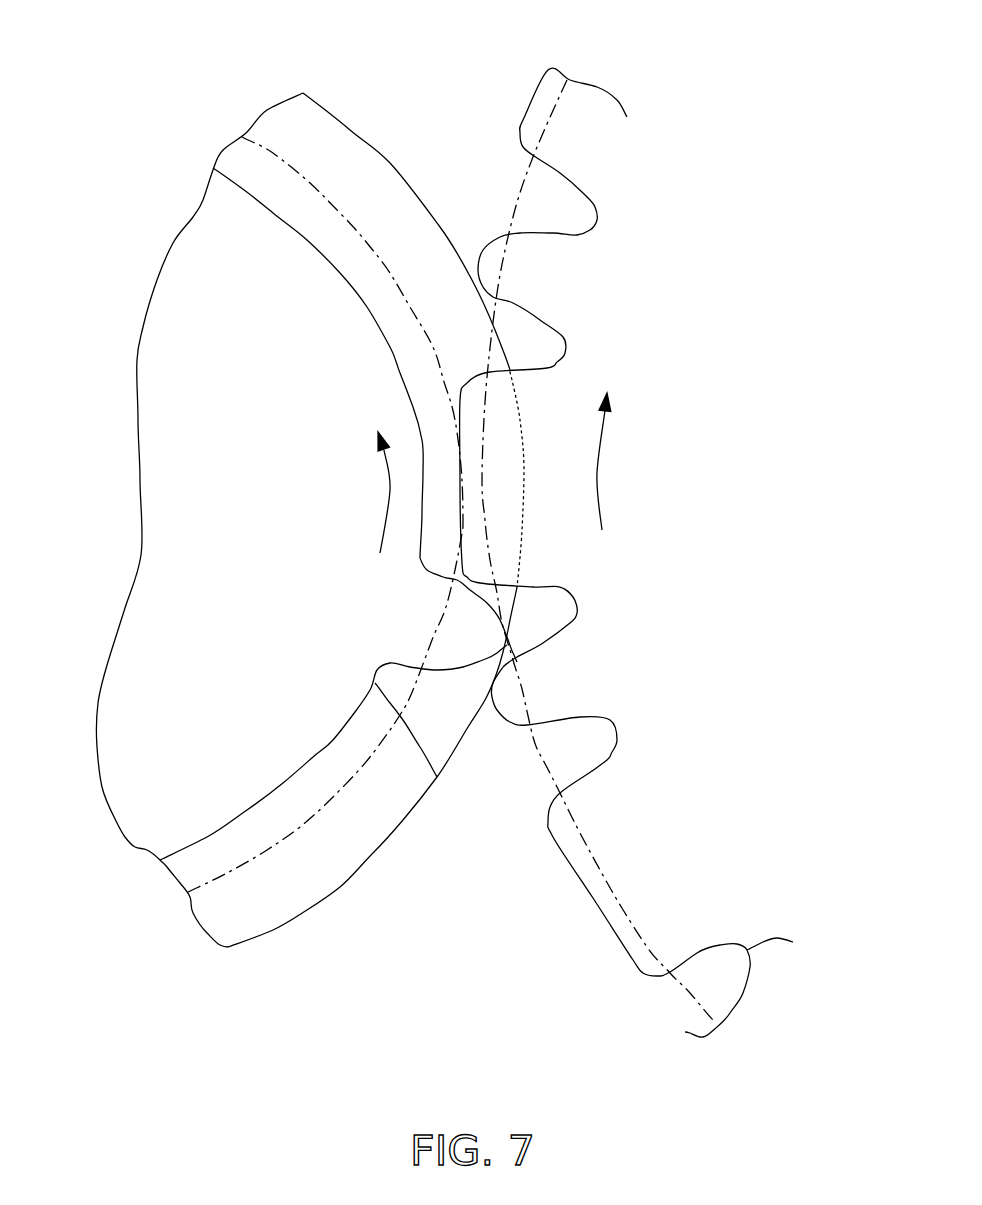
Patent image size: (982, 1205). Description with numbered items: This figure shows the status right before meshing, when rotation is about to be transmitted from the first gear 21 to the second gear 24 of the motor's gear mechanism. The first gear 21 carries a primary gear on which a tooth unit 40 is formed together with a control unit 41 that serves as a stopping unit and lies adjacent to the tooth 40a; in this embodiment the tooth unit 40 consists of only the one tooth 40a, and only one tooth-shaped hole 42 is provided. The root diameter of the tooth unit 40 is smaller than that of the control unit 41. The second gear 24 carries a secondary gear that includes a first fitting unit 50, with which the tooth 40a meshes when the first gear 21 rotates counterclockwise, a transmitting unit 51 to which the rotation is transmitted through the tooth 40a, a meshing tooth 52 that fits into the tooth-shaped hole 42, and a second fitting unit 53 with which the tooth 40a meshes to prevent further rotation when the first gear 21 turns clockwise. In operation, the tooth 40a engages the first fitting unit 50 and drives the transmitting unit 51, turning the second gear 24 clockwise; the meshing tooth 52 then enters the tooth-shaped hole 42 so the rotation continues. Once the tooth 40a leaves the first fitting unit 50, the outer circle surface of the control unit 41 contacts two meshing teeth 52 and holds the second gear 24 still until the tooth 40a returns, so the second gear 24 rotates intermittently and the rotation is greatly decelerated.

The first gear 21 is at (150, 255).
The second gear 24 is at (722, 328).
The tooth unit 40 is at (390, 621).
The tooth 40a is at (467, 655).
The control unit 41 is at (347, 157).
The tooth-shaped hole 42 is at (423, 730).
The first fitting unit 50 is at (560, 612).
The transmitting unit 51 is at (505, 522).
The meshing tooth 52 is at (497, 248).
The second fitting unit 53 is at (557, 340).